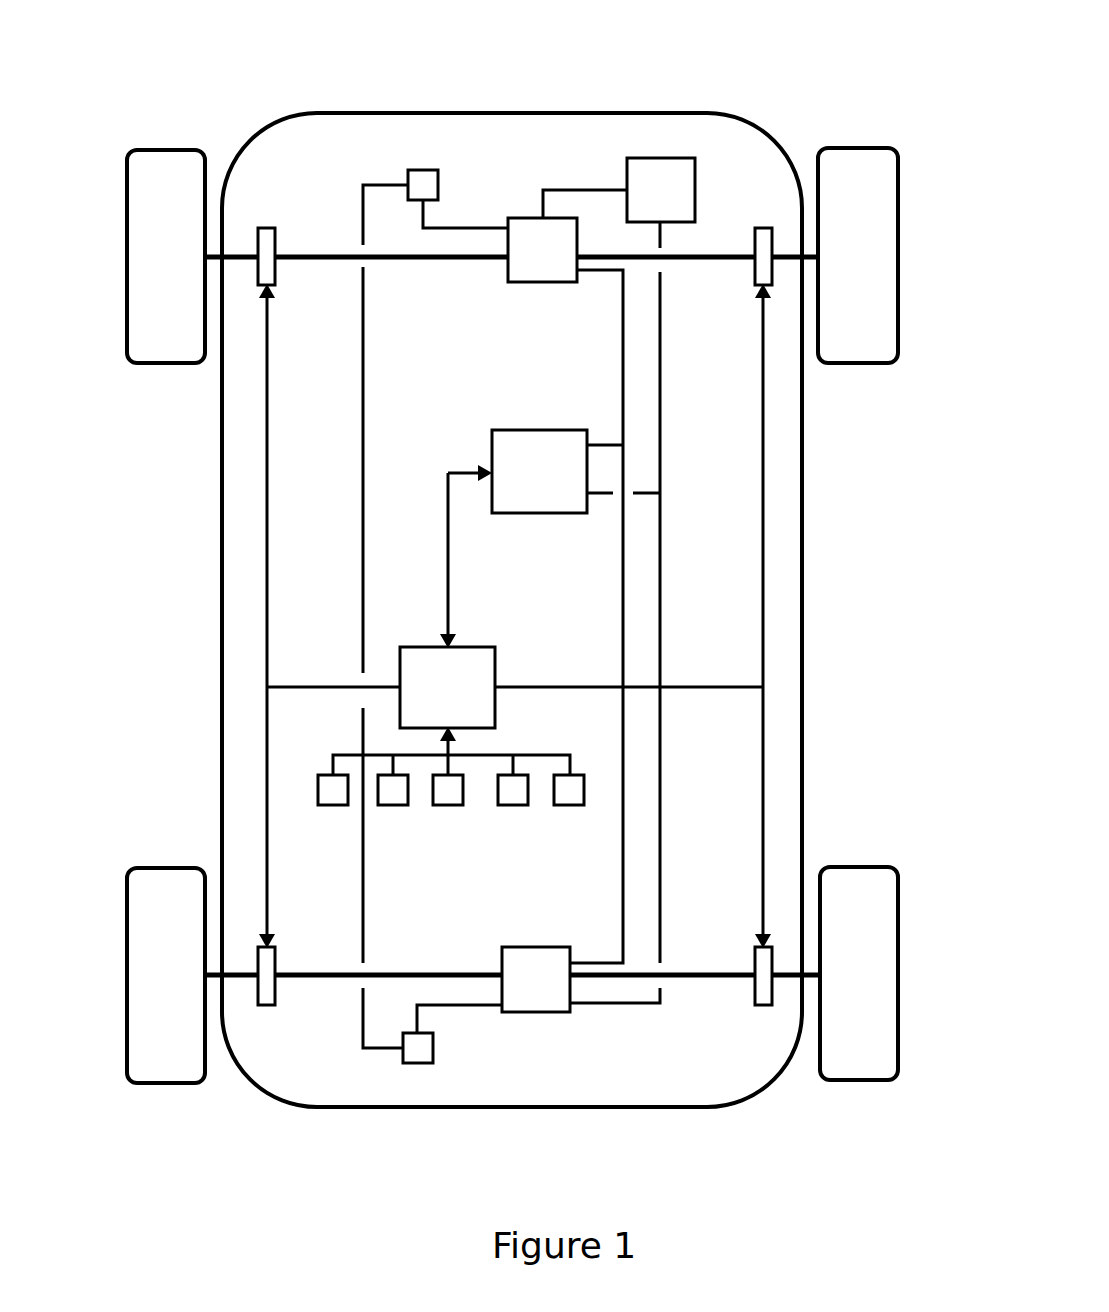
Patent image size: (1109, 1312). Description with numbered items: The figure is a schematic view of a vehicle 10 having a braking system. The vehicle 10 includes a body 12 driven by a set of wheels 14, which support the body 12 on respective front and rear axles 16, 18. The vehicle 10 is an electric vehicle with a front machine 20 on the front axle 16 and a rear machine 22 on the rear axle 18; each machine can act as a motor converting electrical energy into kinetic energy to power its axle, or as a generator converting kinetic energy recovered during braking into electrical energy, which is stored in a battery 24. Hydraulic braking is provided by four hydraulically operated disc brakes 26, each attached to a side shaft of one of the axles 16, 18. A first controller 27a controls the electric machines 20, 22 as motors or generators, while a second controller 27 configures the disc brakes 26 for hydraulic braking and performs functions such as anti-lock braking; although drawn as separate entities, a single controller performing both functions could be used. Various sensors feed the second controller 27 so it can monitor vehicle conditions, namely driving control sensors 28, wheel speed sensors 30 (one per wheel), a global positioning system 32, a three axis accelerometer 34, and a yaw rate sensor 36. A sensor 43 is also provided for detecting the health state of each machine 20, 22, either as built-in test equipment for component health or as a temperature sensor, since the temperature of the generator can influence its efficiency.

The vehicle 10 is at (352, 46).
The body 12 is at (637, 117).
The wheels 14 is at (146, 150).
The front axle 16 is at (428, 262).
The rear axle 18 is at (715, 980).
The front machine 20 is at (520, 282).
The rear machine 22 is at (530, 947).
The battery 24 is at (625, 162).
The disc brakes 26 is at (260, 228).
The second controller 27 is at (405, 647).
The first controller 27a is at (492, 432).
The driving control sensors 28 is at (395, 805).
The wheel speed sensors 30 is at (318, 805).
The global positioning system 32 is at (437, 805).
The three axis accelerometer 34 is at (518, 805).
The yaw rate sensor 36 is at (558, 805).
The sensor 43 is at (408, 175).